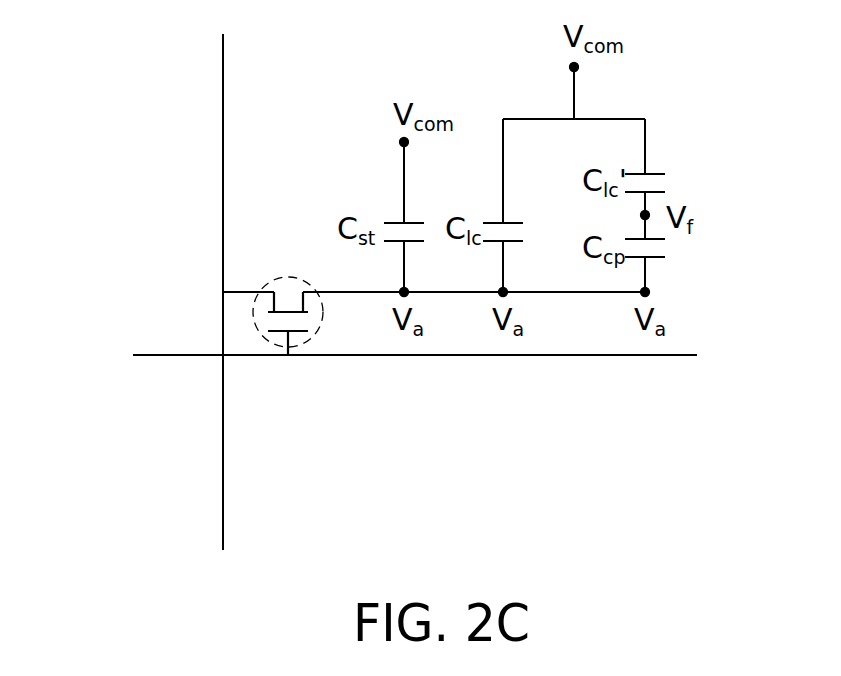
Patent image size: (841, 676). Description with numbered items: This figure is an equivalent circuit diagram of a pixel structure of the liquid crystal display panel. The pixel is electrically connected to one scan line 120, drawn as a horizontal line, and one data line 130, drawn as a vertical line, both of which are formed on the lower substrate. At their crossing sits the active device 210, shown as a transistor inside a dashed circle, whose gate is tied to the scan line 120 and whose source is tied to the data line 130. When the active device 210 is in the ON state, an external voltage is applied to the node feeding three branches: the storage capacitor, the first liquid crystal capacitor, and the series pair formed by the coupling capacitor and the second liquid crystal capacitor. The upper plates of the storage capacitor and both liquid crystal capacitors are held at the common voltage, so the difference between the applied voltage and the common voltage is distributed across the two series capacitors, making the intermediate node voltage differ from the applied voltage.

The active device 210 is at (273, 280).
The scan line 120 is at (168, 357).
The data line 130 is at (222, 470).